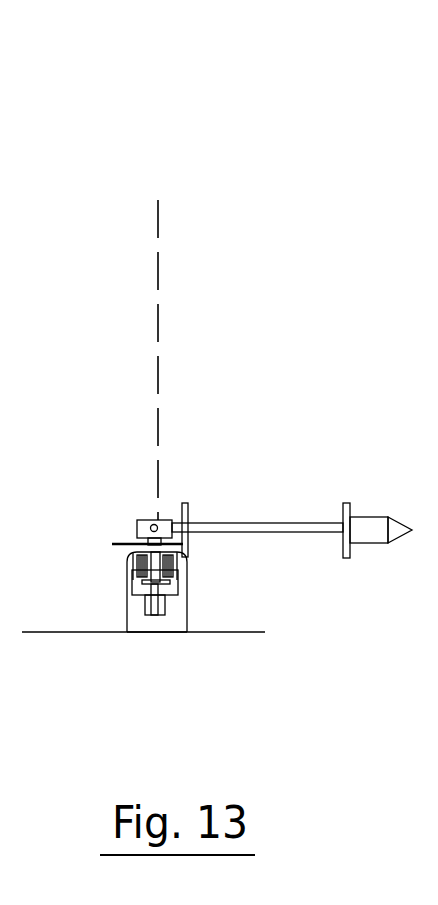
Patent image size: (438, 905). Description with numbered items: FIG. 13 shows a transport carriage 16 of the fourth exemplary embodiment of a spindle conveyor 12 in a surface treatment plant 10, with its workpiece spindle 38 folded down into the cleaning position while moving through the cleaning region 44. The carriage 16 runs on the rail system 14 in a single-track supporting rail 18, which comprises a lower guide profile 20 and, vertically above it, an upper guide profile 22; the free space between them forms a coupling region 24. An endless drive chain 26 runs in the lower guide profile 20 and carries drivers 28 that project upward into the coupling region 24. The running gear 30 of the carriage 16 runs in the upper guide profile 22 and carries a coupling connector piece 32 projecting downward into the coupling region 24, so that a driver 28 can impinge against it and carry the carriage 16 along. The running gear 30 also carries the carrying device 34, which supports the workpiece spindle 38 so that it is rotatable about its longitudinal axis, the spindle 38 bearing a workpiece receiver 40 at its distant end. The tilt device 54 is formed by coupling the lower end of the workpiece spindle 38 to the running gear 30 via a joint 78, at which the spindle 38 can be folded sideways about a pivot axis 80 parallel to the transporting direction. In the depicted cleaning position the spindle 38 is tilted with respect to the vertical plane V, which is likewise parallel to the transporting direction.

The surface treatment plant 10 is at (320, 207).
The spindle conveyor 12 is at (362, 290).
The rail system 14 is at (128, 637).
The transport carriage 16 is at (210, 487).
The supporting rail 18 is at (194, 598).
The lower guide profile 20 is at (130, 602).
The upper guide profile 22 is at (148, 556).
The coupling region 24 is at (128, 582).
The drive chain 26 is at (153, 634).
The driver 28 is at (168, 600).
The running gear 30 is at (180, 570).
The coupling connector piece 32 is at (178, 588).
The carrying device 34 is at (299, 546).
The workpiece spindle 38 is at (308, 522).
The workpiece receiver 40 is at (382, 508).
The cleaning region 44 is at (183, 153).
The tilt device 54 is at (122, 530).
The joint 78 is at (170, 514).
The pivot axis 80 is at (153, 517).
The vertical plane V is at (158, 275).